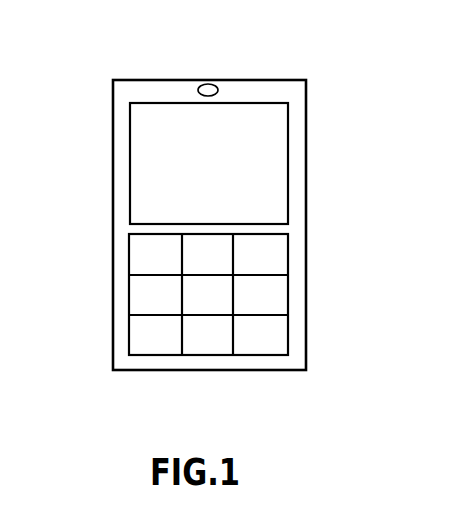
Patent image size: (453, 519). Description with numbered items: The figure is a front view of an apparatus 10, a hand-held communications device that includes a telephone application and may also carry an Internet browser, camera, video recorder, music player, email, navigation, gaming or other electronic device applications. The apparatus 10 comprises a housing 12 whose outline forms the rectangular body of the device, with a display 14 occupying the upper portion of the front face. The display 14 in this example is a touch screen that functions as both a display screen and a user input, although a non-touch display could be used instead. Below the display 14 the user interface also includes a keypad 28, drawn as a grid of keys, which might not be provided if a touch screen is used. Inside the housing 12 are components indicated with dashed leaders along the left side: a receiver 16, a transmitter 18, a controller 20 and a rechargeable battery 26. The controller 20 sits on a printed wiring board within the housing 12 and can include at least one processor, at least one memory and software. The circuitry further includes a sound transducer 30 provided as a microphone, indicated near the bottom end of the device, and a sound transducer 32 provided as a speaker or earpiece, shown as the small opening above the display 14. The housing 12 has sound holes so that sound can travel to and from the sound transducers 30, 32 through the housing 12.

The apparatus 10 is at (354, 83).
The housing 12 is at (112, 122).
The display 14 is at (273, 176).
The receiver 16 is at (112, 167).
The transmitter 18 is at (112, 210).
The controller 20 is at (112, 252).
The rechargeable battery 26 is at (112, 293).
The keypad 28 is at (273, 298).
The sound transducer 30 is at (148, 390).
The sound transducer 32 is at (210, 89).